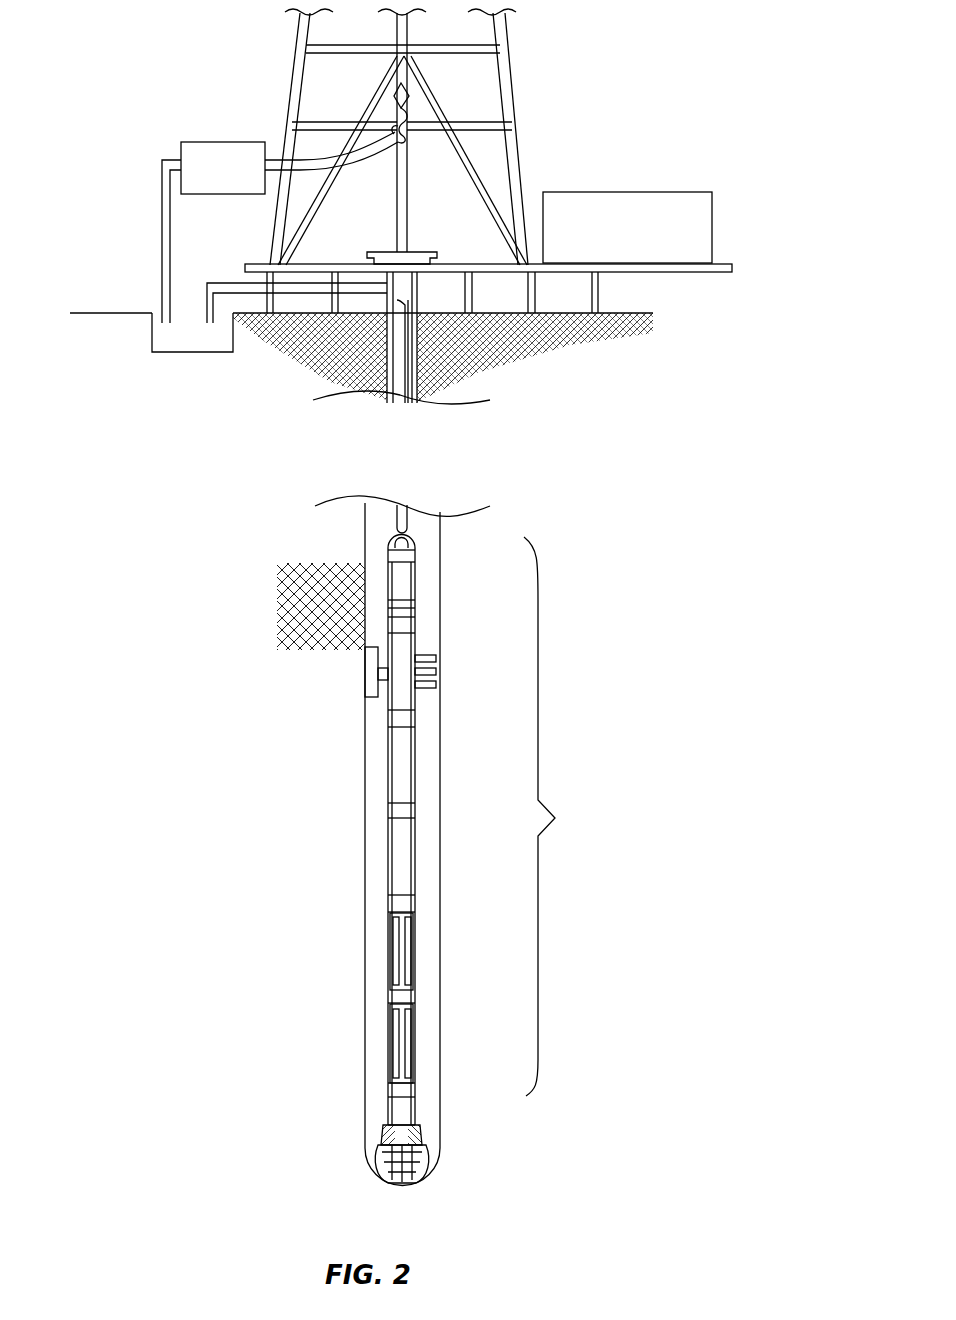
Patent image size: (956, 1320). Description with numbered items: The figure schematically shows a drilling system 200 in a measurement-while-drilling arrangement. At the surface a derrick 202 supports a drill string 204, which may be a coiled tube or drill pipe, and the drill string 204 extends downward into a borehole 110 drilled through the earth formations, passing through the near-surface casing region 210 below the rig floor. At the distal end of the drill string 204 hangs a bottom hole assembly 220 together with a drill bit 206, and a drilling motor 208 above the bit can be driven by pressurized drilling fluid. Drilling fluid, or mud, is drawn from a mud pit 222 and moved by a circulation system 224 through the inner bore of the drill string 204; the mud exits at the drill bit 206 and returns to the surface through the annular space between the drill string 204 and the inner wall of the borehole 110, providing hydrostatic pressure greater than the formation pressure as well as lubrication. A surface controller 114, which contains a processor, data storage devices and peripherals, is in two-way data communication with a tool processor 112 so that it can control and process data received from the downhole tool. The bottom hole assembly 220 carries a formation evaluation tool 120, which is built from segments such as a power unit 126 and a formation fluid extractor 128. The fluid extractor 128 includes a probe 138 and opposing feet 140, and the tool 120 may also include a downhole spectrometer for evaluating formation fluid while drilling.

The drilling system 200 is at (761, 1016).
The derrick 202 is at (518, 92).
The drill string 204 is at (410, 372).
The drill bit 206 is at (425, 1152).
The drilling motor 208 is at (415, 1108).
The casing 210 is at (382, 382).
The mud pit 222 is at (192, 350).
The circulation system 224 is at (222, 140).
The surface controller 114 is at (630, 192).
The borehole 110 is at (368, 737).
The tool processor 112 is at (453, 830).
The formation evaluation tool 120 is at (418, 645).
The power unit 126 is at (405, 583).
The formation fluid extractor 128 is at (410, 700).
The probe 138 is at (368, 672).
The opposing feet 140 is at (445, 682).
The bottom hole assembly 220 is at (564, 816).